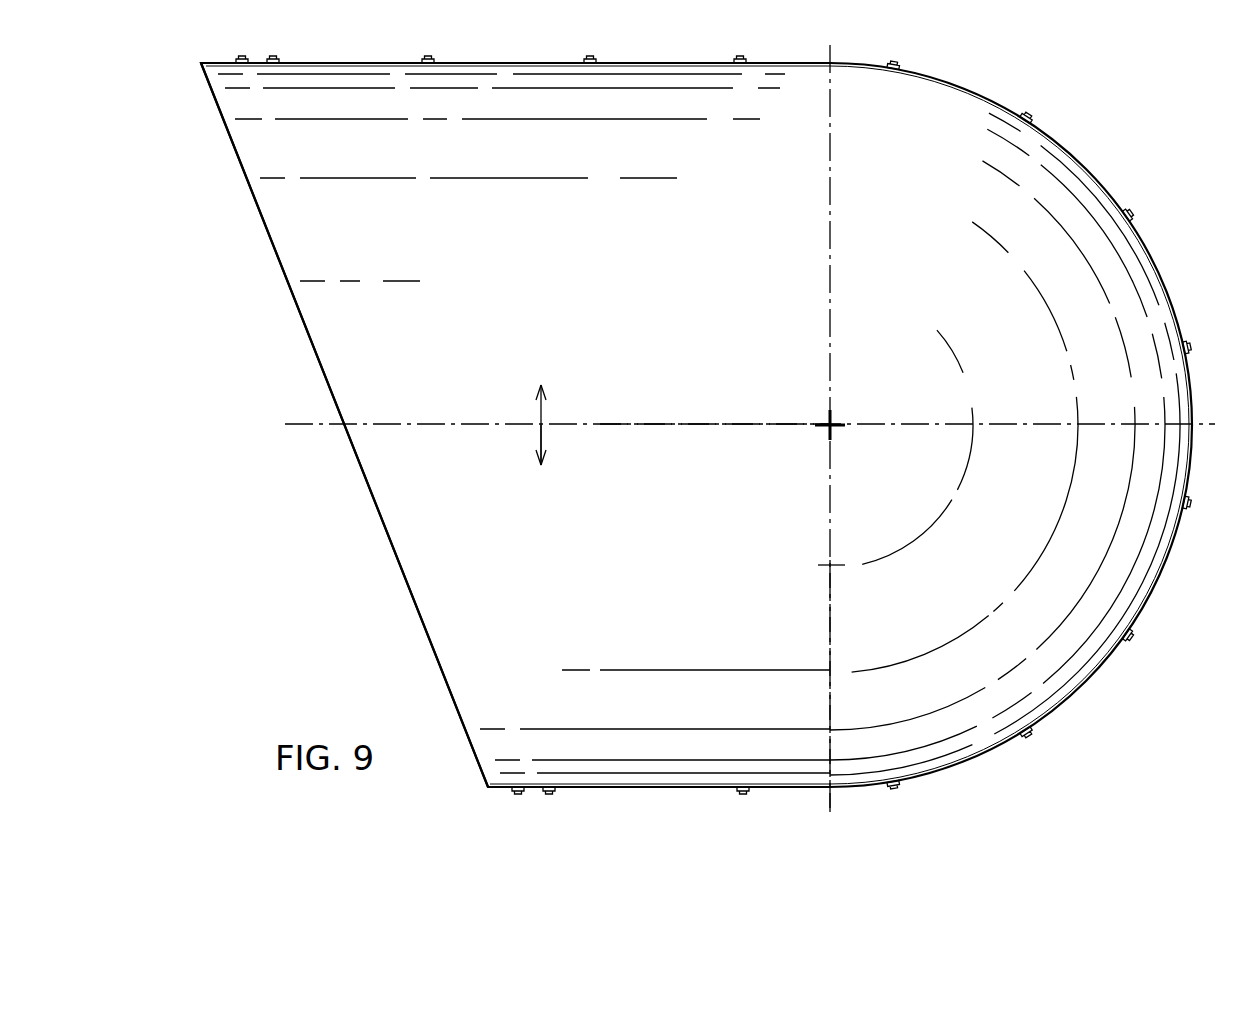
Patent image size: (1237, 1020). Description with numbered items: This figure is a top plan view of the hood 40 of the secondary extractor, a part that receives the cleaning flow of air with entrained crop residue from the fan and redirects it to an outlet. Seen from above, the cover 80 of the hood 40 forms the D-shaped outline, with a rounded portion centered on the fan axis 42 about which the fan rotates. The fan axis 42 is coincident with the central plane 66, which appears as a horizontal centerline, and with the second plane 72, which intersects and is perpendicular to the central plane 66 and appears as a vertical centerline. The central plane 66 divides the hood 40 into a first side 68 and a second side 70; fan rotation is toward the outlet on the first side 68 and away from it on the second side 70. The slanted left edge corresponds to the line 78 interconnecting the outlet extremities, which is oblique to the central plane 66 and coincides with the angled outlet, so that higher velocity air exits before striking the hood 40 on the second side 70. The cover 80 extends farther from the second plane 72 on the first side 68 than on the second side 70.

The hood 40 is at (1140, 172).
The cover 80 is at (1052, 263).
The fan axis 42 is at (823, 429).
The central plane 66 is at (668, 428).
The first side 68 is at (538, 412).
The second side 70 is at (538, 437).
The second plane 72 is at (828, 638).
The line 78 is at (413, 595).